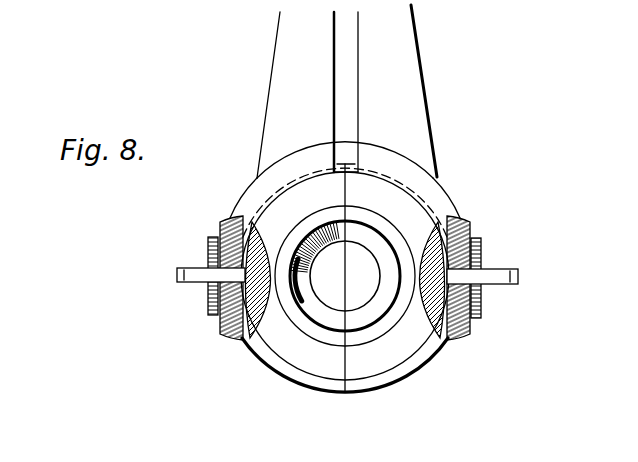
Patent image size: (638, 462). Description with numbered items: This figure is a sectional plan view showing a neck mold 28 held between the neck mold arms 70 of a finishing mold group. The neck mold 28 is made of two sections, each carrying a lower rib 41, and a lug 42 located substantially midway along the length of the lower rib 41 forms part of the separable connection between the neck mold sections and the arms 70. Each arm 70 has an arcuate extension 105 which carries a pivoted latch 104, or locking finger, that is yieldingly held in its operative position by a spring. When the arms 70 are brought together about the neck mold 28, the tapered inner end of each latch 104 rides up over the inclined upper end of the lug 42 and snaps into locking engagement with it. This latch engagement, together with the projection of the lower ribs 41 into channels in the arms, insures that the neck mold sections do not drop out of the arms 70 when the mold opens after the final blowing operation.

The neck mold arms 70 is at (407, 118).
The neck mold 28 is at (327, 360).
The lower rib 41 is at (455, 320).
The lug 42 is at (222, 312).
The latch 104 is at (178, 275).
The arcuate extension 105 is at (463, 218).